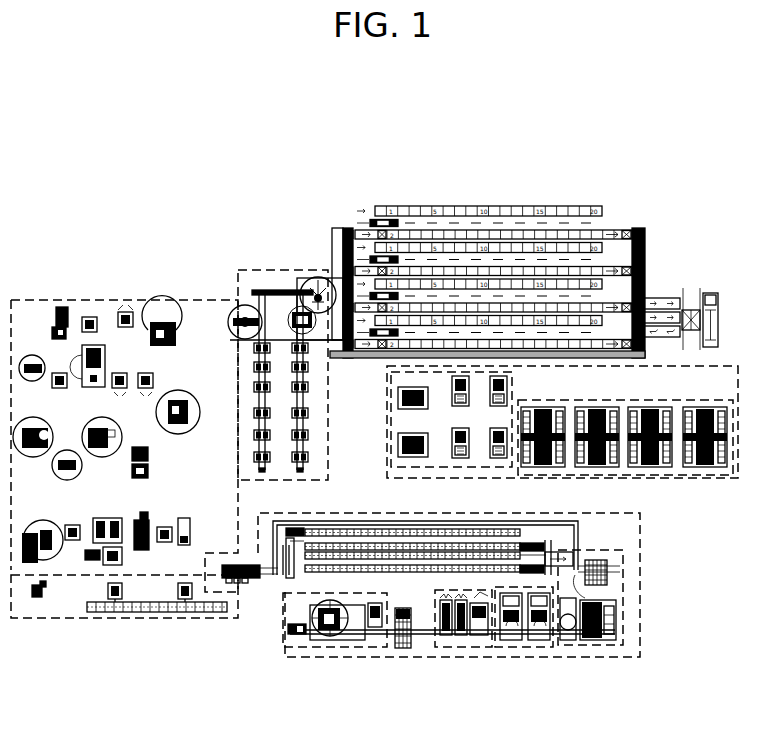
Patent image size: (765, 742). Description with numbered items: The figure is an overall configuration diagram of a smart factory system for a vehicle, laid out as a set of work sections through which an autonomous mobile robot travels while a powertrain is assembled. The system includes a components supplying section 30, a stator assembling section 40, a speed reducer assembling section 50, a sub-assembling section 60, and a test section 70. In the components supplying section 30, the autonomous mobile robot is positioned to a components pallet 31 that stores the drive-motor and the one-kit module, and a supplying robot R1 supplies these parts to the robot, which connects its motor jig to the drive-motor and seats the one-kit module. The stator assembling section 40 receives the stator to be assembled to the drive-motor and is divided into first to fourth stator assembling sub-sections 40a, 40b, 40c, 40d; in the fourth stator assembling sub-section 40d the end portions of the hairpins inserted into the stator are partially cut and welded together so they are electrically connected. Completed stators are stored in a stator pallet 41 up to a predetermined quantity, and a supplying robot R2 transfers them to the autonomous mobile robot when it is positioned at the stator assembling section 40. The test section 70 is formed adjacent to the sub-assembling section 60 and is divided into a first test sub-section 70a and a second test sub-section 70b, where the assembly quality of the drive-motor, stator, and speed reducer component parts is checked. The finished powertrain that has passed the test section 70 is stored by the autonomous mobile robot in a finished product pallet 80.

The components supplying section 30 is at (124, 641).
The components pallet 31 is at (160, 614).
The supplying robot R1 is at (108, 588).
The supplying robot R2 is at (246, 584).
The stator assembling section 40 is at (449, 606).
The first stator assembling sub-section 40a is at (322, 649).
The second stator assembling sub-section 40b is at (463, 649).
The third stator assembling sub-section 40c is at (527, 649).
The fourth stator assembling sub-section 40d is at (603, 649).
The stator pallet 41 is at (357, 536).
The speed reducer assembling section 50 is at (157, 300).
The sub-assembling section 60 is at (272, 268).
The test section 70 is at (551, 451).
The first test sub-section 70a is at (390, 412).
The second test sub-section 70b is at (690, 480).
The finished product pallet 80 is at (478, 236).